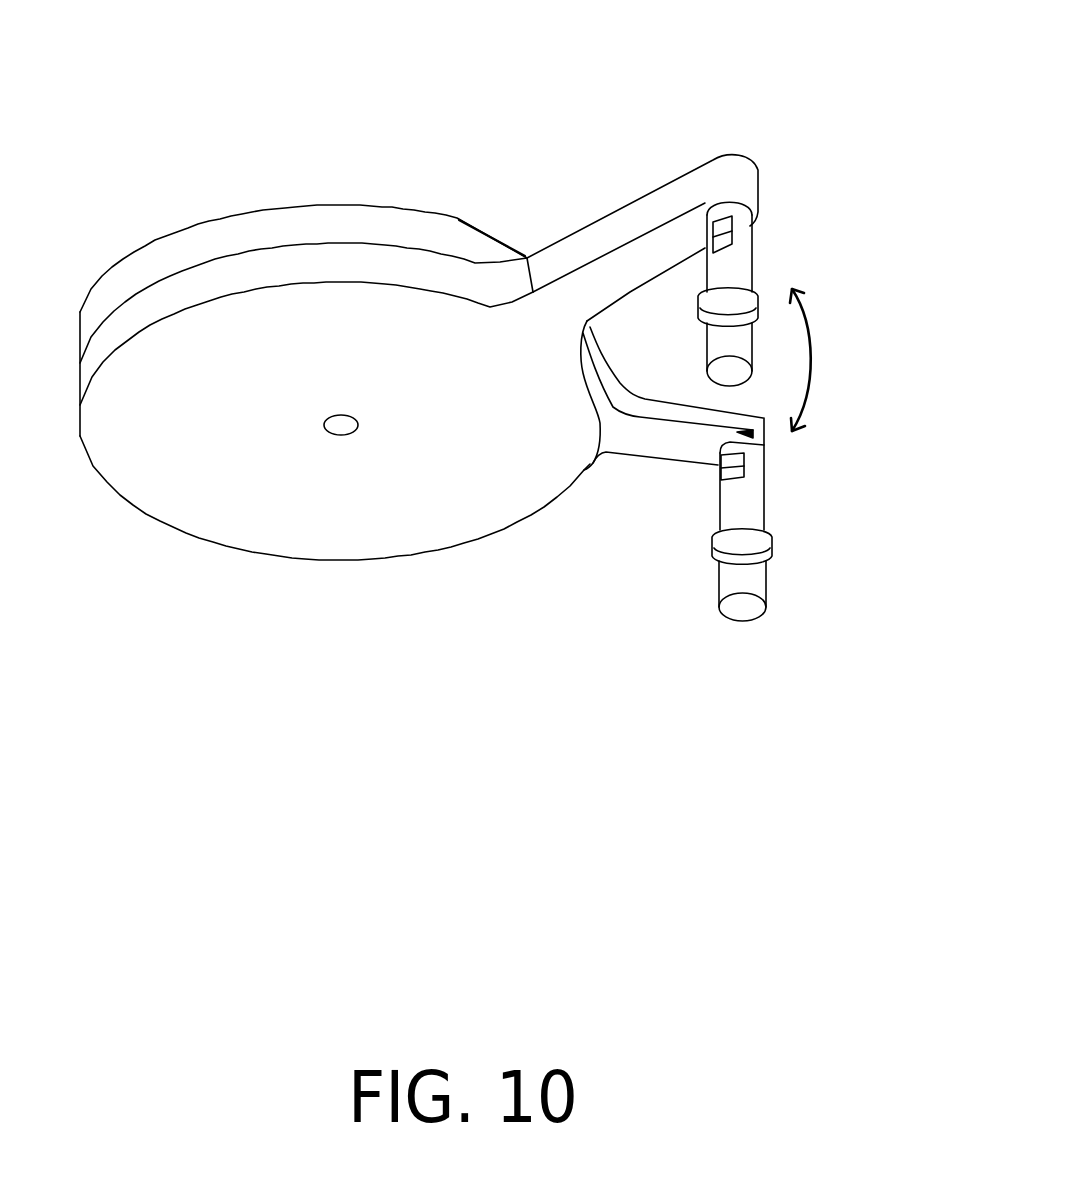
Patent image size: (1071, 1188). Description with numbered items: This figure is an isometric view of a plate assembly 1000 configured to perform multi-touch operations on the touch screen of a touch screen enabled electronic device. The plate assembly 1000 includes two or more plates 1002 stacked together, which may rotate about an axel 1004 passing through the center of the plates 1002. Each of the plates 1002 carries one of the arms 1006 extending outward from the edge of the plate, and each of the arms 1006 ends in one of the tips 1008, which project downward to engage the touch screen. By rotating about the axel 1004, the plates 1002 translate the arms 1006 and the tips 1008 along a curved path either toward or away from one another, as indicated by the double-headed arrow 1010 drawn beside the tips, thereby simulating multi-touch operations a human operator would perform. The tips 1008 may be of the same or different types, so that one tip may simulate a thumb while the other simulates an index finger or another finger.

The plate assembly 1000 is at (680, 40).
The plates 1002 is at (155, 192).
The axel 1004 is at (327, 434).
The arms 1006 is at (800, 140).
The tips 1008 is at (806, 628).
The rotation direction 1010 is at (813, 372).